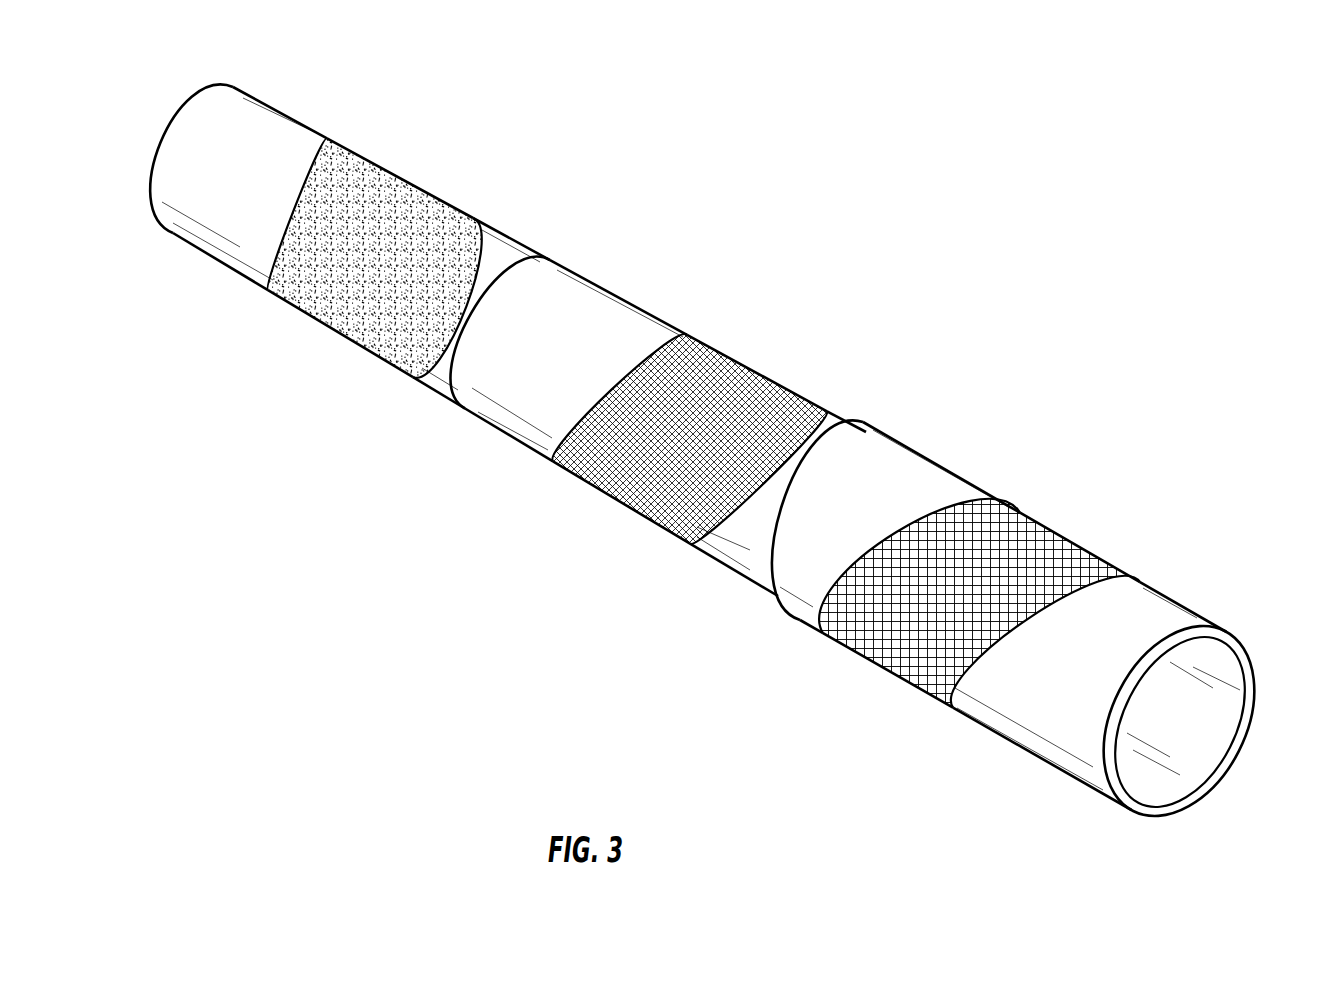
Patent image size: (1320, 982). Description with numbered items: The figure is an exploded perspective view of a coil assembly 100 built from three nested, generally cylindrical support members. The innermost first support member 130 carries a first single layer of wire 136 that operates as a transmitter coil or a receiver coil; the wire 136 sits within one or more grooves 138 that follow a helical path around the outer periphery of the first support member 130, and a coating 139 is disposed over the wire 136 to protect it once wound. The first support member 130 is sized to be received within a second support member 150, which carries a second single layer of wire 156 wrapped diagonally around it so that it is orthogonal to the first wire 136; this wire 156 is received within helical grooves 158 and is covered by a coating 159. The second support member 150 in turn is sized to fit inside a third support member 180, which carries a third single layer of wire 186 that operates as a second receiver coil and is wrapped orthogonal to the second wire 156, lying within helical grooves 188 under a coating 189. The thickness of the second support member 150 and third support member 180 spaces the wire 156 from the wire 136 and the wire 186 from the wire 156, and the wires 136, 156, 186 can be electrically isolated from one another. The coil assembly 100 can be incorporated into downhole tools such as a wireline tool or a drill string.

The coil assembly 100 is at (972, 150).
The first support member 130 is at (256, 92).
The first single layer of wire 136 is at (400, 179).
The grooves 138 is at (348, 147).
The coating 139 is at (460, 214).
The second support member 150 is at (581, 272).
The second single layer of wire 156 is at (710, 347).
The grooves 158 is at (763, 379).
The coating 159 is at (821, 414).
The third support member 180 is at (926, 454).
The third single layer of wire 186 is at (1038, 522).
The grooves 188 is at (1088, 551).
The coating 189 is at (1140, 581).